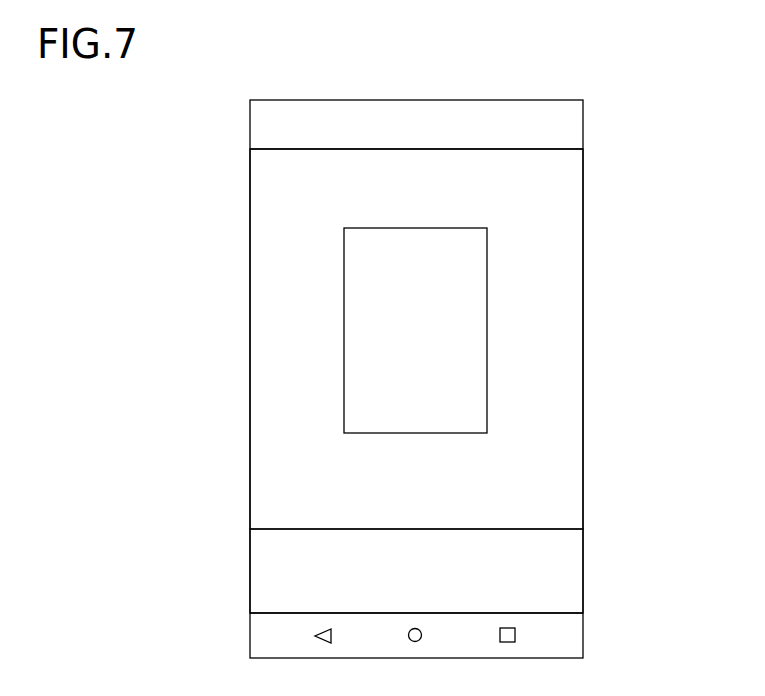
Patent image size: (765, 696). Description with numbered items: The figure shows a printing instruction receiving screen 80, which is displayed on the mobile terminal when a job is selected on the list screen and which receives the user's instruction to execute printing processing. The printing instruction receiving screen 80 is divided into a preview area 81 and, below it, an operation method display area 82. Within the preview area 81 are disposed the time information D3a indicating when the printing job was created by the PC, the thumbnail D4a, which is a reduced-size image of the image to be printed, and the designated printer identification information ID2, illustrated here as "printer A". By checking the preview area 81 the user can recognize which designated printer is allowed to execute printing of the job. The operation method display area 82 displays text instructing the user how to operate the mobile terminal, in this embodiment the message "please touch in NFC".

The printing instruction receiving screen 80 is at (447, 103).
The preview area 81 is at (555, 237).
The operation method display area 82 is at (557, 572).
The time information D3a is at (442, 195).
The thumbnail D4a is at (462, 307).
The designated printer identification information ID2 is at (268, 486).